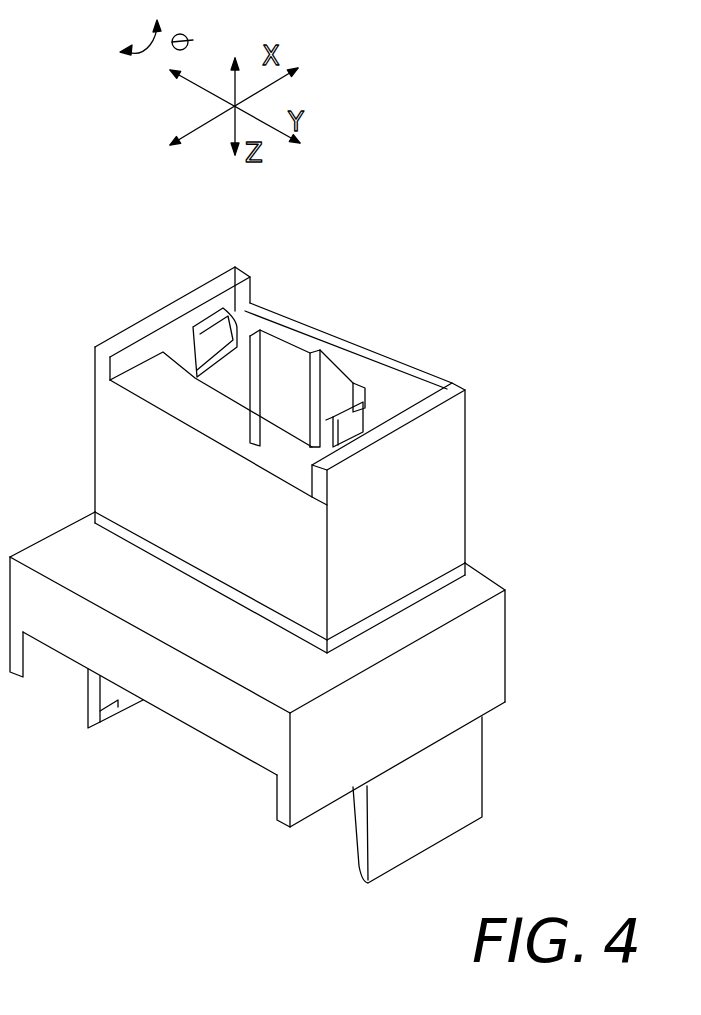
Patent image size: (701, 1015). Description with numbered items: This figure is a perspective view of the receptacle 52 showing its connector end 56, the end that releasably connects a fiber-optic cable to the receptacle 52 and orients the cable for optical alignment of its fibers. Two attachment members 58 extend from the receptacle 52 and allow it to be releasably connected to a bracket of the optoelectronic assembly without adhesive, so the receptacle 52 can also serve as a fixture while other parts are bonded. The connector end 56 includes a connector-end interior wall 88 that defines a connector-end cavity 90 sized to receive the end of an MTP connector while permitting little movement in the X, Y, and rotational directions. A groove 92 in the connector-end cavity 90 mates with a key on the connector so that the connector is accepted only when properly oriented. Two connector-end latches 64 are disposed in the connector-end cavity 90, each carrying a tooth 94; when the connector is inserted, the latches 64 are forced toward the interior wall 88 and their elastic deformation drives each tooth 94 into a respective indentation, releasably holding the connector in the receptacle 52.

The receptacle 52 is at (548, 402).
The connector end 56 is at (436, 395).
The attachment members 58 is at (88, 699).
The connector-end latches 64 is at (240, 312).
The connector-end interior wall 88 is at (301, 392).
The connector-end cavity 90 is at (228, 396).
The groove 92 is at (336, 378).
The tooth 94 is at (225, 320).